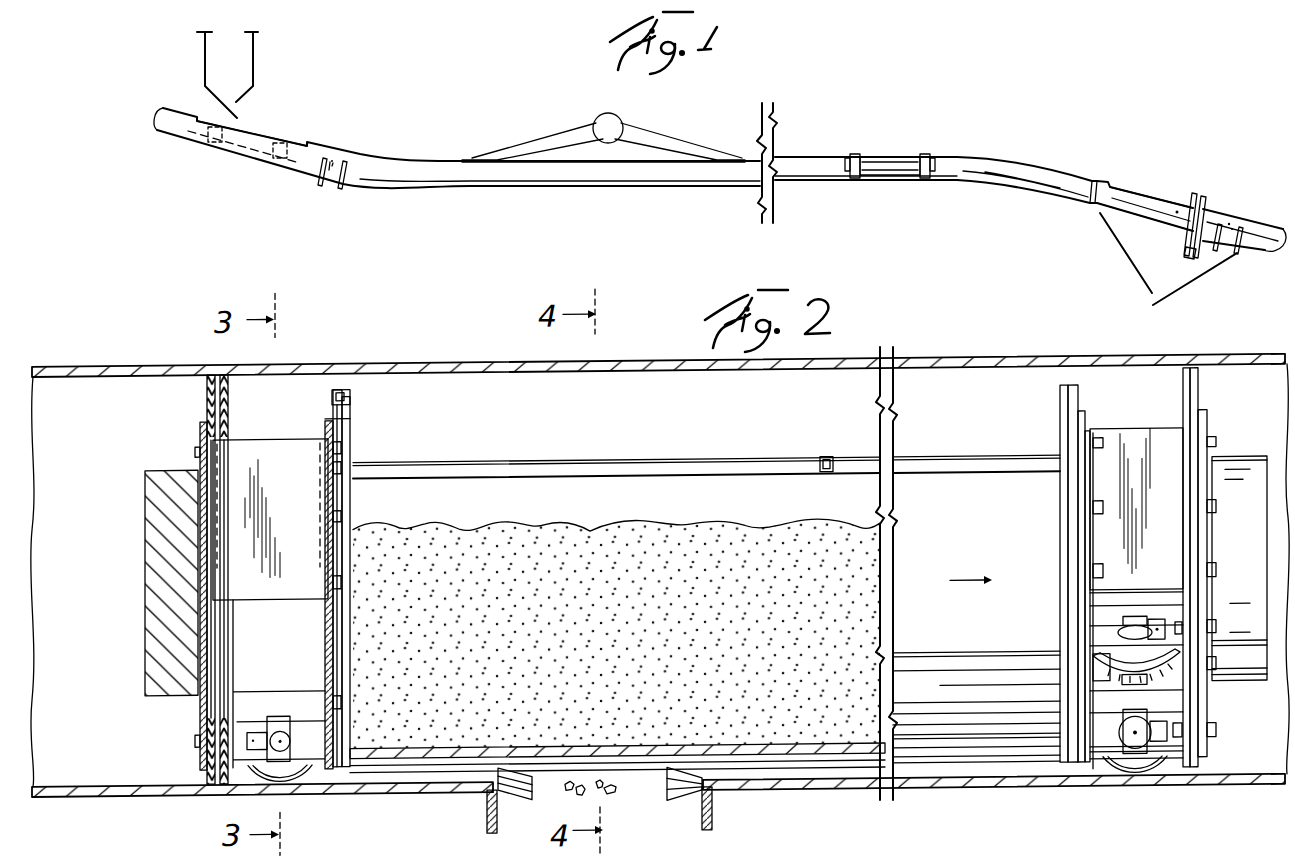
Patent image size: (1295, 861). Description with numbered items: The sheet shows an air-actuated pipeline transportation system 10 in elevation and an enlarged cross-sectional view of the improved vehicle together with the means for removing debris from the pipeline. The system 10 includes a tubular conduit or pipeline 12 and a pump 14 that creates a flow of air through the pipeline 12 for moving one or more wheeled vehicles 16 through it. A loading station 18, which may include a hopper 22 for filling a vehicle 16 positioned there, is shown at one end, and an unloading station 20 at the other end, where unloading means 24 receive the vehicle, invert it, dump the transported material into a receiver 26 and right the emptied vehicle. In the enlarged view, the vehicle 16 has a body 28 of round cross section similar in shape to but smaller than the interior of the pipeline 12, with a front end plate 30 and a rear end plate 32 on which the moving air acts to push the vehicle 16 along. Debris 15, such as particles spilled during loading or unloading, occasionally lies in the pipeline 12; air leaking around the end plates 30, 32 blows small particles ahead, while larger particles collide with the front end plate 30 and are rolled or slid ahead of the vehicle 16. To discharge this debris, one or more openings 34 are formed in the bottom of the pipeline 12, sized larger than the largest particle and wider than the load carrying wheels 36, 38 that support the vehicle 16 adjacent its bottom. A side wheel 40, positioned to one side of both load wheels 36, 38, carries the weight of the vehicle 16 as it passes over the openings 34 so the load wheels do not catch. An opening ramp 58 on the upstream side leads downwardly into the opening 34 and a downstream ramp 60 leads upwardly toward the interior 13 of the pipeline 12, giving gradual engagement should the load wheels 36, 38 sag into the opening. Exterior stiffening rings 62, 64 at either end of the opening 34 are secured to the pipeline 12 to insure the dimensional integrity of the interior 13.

In FIG. 1, the air-actuated pipeline transportation system 10 is at (792, 149).
In FIG. 1, the pipeline 12 is at (983, 150).
In FIG. 2, the pipeline 12 is at (389, 368).
In FIG. 2, the interior of the pipeline 13 is at (943, 785).
In FIG. 1, the pump 14 is at (597, 117).
In FIG. 2, the debris 15 is at (608, 528).
In FIG. 1, the wheeled vehicle 16 is at (884, 160).
In FIG. 2, the wheeled vehicle 16 is at (514, 460).
In FIG. 1, the loading station 18 is at (263, 114).
In FIG. 1, the unloading station 20 is at (1127, 177).
In FIG. 1, the hopper 22 is at (253, 50).
In FIG. 1, the unloading means 24 is at (1186, 192).
In FIG. 1, the receiver 26 is at (1120, 257).
In FIG. 2, the body 28 is at (413, 466).
In FIG. 2, the front end plate 30 is at (1200, 405).
In FIG. 2, the rear end plate 32 is at (207, 406).
In FIG. 1, the opening 34 is at (330, 189).
In FIG. 2, the load carrying wheel 36 is at (293, 786).
In FIG. 2, the load carrying wheel 38 is at (1143, 777).
In FIG. 2, the side wheel 40 is at (1120, 680).
In FIG. 2, the opening ramp 58 is at (515, 806).
In FIG. 2, the downstream ramp 60 is at (683, 806).
In FIG. 2, the exterior stiffening ring 62 is at (478, 827).
In FIG. 2, the exterior stiffening ring 64 is at (714, 830).